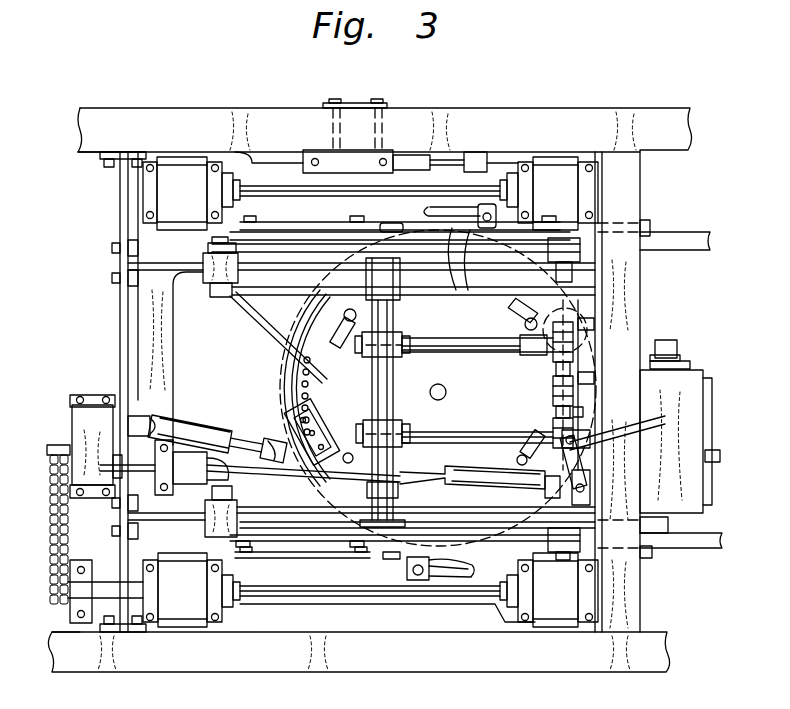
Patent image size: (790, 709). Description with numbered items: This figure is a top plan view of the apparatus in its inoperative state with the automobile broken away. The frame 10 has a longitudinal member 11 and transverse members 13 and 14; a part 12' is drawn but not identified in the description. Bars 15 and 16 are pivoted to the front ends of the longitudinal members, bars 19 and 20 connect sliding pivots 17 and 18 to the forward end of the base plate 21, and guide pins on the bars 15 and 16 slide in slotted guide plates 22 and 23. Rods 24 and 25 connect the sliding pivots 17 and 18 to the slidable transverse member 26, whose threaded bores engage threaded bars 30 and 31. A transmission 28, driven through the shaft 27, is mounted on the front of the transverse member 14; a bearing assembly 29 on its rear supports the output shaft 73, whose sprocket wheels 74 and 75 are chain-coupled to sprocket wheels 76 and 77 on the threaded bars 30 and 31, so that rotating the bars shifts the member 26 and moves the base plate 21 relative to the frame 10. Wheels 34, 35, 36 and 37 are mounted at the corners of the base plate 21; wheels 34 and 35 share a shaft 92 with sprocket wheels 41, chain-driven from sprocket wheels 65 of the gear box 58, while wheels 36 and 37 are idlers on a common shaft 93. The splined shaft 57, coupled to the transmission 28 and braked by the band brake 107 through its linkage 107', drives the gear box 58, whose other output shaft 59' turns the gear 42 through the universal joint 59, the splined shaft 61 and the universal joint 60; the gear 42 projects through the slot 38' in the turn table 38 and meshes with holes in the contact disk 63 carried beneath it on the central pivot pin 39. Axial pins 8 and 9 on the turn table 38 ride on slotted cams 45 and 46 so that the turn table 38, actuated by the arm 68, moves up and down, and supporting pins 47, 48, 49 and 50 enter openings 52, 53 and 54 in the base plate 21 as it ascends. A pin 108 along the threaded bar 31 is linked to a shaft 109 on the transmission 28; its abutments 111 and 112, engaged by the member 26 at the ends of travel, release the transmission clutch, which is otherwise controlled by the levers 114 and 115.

The axial pin 8 is at (407, 572).
The axial pin 9 is at (482, 250).
The frame 10 is at (109, 297).
The longitudinal member 11 is at (169, 265).
The bar 12' is at (166, 531).
The transverse member 13 is at (120, 215).
The transverse member 14 is at (602, 275).
The bar 15 is at (497, 540).
The bar 16 is at (338, 246).
The sliding pivot 17 is at (208, 528).
The sliding pivot 18 is at (207, 286).
The bar 19 is at (436, 530).
The bar 20 is at (452, 255).
The base plate 21 is at (153, 343).
The slotted guide plate 22 is at (303, 560).
The slotted guide plate 23 is at (293, 232).
The rod 24 is at (290, 547).
The rod 25 is at (272, 288).
The transverse member 26 is at (382, 392).
The shaft 27 is at (713, 463).
The transmission 28 is at (664, 451).
The bearing assembly 29 is at (592, 340).
The threaded bar 30 is at (474, 436).
The threaded bar 31 is at (487, 349).
The wheel 34 is at (543, 589).
The wheel 35 is at (170, 589).
The wheel 36 is at (169, 194).
The wheel 37 is at (543, 194).
The turn table 38 is at (287, 388).
The slot 38' is at (280, 388).
The central pivot pin 39 is at (446, 390).
The sprocket wheels 41 is at (52, 596).
The gear 42 is at (327, 436).
The slotted cam 45 is at (470, 576).
The slotted cam 46 is at (428, 212).
The axial supporting pin 47 is at (346, 453).
The axial supporting pin 48 is at (346, 312).
The axial supporting pin 49 is at (534, 320).
The axial supporting pin 50 is at (523, 458).
The opening 52 is at (333, 354).
The opening 53 is at (512, 308).
The opening 54 is at (518, 448).
The splined shaft 57 is at (405, 477).
The gear box 58 is at (84, 440).
The universal joint 59 is at (147, 413).
The output shaft 59' is at (82, 403).
The universal joint 60 is at (272, 450).
The splined shaft 61 is at (211, 438).
The contact disk 63 is at (292, 352).
The sprocket wheels 65 is at (50, 462).
The arm 68 is at (467, 245).
The transmission output shaft 73 is at (555, 405).
The sprocket wheel 74 is at (556, 386).
The sprocket wheel 75 is at (562, 388).
The sprocket wheel 76 is at (590, 444).
The sprocket wheel 77 is at (562, 320).
The shaft 92 is at (316, 593).
The common shaft 93 is at (264, 188).
The band brake 107 is at (600, 470).
The linkage 107' is at (664, 425).
The pin 108 is at (410, 355).
The shaft 109 is at (672, 343).
The abutment 111 is at (330, 396).
The abutment 112 is at (518, 356).
The lever 114 is at (696, 548).
The lever 115 is at (692, 366).